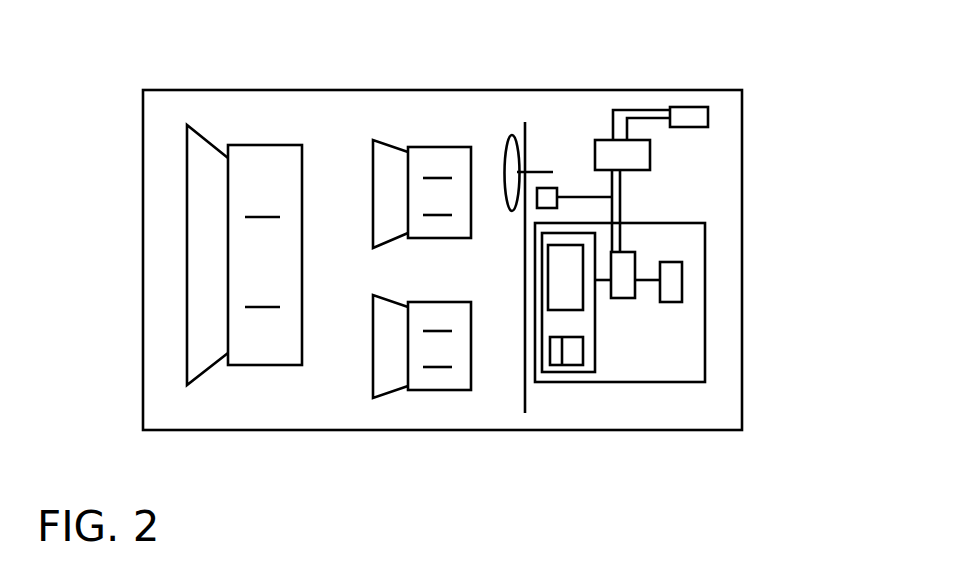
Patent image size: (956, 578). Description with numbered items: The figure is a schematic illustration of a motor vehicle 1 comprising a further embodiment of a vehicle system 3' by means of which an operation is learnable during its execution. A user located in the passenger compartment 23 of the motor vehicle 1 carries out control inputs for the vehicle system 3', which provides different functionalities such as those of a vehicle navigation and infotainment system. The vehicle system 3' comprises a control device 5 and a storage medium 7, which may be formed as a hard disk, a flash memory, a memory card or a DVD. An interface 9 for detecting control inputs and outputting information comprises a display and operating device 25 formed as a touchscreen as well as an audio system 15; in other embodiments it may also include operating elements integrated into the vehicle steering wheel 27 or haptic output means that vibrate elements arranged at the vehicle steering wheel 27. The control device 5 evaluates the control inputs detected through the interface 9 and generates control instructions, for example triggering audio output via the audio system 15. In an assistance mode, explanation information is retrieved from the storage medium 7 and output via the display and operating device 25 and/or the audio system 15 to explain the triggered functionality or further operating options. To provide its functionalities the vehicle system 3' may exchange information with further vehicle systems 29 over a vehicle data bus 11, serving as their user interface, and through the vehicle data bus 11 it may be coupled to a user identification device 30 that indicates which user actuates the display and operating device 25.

The motor vehicle 1 is at (432, 90).
The passenger compartment 23 is at (327, 417).
The vehicle steering wheel 27 is at (515, 140).
The user identification device 30 is at (550, 192).
The vehicle data bus 11 is at (643, 118).
The further vehicle systems 29 is at (650, 157).
The vehicle system 3' is at (669, 302).
The interface 9 is at (593, 360).
The display and operating device 25 is at (583, 308).
The audio system 15 is at (573, 358).
The control device 5 is at (633, 298).
The storage medium 7 is at (682, 288).